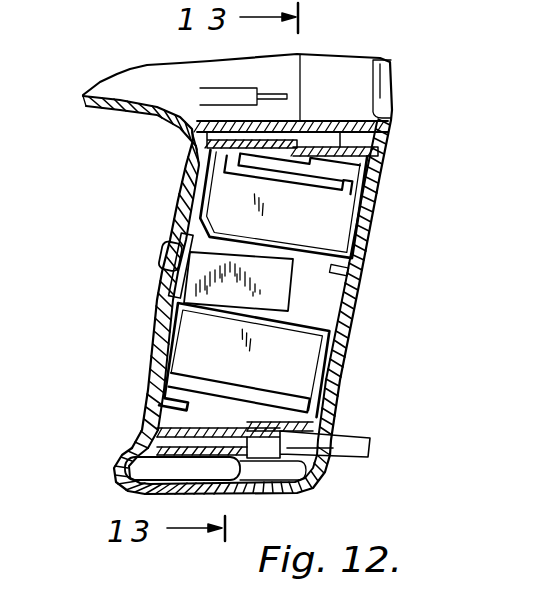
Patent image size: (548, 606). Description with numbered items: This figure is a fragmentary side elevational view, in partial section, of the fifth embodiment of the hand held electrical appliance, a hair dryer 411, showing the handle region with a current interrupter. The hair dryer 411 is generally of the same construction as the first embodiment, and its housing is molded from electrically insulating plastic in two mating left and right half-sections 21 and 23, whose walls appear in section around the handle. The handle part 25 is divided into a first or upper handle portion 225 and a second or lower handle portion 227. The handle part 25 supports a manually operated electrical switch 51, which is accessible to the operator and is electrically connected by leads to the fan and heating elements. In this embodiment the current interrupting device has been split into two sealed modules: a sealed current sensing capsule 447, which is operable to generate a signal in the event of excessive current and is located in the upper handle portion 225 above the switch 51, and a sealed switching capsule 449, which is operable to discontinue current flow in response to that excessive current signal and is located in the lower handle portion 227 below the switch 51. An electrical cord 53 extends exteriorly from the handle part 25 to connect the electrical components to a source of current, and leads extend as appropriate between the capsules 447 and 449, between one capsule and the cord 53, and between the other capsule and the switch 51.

The housing half-section 21 is at (190, 170).
The housing half-section 23 is at (353, 325).
The handle part 25 is at (372, 285).
The electrical switch 51 is at (207, 257).
The electrical cord 53 is at (373, 447).
The hair dryer 411 is at (138, 281).
The upper handle portion 225 is at (353, 165).
The lower handle portion 227 is at (177, 413).
The current sensing capsule 447 is at (330, 215).
The switching capsule 449 is at (297, 357).